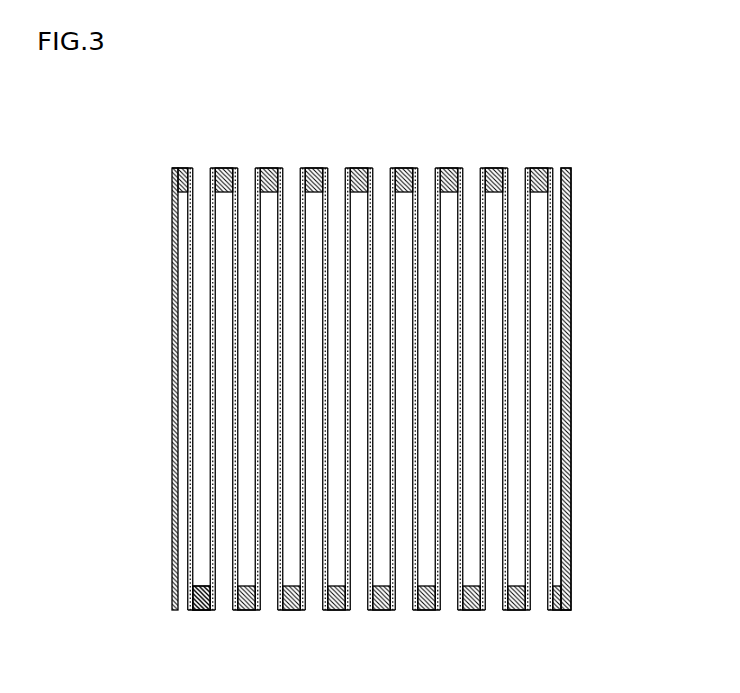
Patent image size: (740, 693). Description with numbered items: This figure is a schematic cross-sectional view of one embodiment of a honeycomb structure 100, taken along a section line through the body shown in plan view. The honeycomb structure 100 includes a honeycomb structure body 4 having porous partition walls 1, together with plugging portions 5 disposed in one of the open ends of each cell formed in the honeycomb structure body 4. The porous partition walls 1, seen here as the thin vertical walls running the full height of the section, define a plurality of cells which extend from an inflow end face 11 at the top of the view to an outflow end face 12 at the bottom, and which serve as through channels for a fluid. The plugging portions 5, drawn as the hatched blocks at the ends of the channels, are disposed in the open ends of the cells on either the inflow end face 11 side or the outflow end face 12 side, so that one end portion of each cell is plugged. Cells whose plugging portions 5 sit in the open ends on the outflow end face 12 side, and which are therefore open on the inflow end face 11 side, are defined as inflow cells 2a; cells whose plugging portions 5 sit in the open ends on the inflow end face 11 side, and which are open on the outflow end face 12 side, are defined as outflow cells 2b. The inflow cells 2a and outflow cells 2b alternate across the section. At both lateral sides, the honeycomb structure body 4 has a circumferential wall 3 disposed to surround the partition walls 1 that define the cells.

The honeycomb structure 100 is at (600, 64).
The partition wall 1 is at (417, 167).
The inflow cell 2a is at (341, 166).
The outflow cell 2b is at (354, 608).
The circumferential wall 3 is at (571, 242).
The honeycomb structure body 4 is at (577, 333).
The plugging portion 5 is at (498, 167).
The inflow end face 11 is at (192, 154).
The outflow end face 12 is at (190, 618).